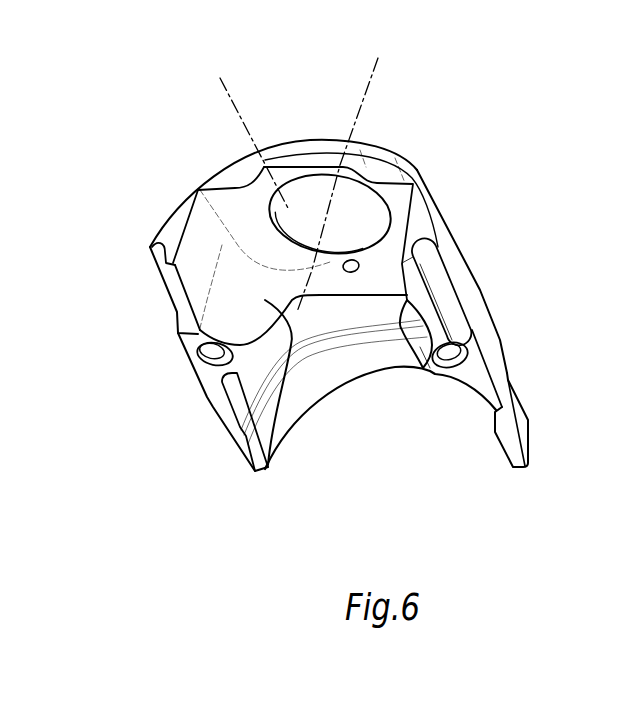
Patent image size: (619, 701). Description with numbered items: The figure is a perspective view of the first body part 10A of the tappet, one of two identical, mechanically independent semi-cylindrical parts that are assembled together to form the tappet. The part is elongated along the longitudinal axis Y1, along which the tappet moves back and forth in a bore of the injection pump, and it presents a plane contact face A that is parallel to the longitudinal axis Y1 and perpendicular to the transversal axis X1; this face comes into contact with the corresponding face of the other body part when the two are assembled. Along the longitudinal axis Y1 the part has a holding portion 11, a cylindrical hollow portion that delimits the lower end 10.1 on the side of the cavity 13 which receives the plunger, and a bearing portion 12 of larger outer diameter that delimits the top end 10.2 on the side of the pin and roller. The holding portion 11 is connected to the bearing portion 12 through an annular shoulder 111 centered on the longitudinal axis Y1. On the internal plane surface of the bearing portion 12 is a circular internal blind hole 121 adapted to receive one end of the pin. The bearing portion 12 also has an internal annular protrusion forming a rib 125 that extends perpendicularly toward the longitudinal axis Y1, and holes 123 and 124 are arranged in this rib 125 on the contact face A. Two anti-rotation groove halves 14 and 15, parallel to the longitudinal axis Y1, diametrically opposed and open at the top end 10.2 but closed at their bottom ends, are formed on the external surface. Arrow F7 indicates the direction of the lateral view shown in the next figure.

The first body part 10A is at (174, 171).
The lower end 10.1 is at (518, 470).
The top end 10.2 is at (318, 162).
The holding portion 11 is at (513, 430).
The bearing portion 12 is at (463, 283).
The cavity 13 is at (354, 428).
The anti-rotation groove 14 is at (148, 239).
The anti-rotation groove 15 is at (431, 237).
The annular shoulder 111 is at (211, 419).
The internal blind hole 121 is at (299, 180).
The hole 123 is at (195, 368).
The hole 124 is at (454, 366).
The rib 125 is at (253, 330).
The plane contact face A is at (205, 397).
The arrow F7 is at (234, 536).
The transversal axis X1 is at (352, 182).
The longitudinal axis Y1 is at (251, 131).